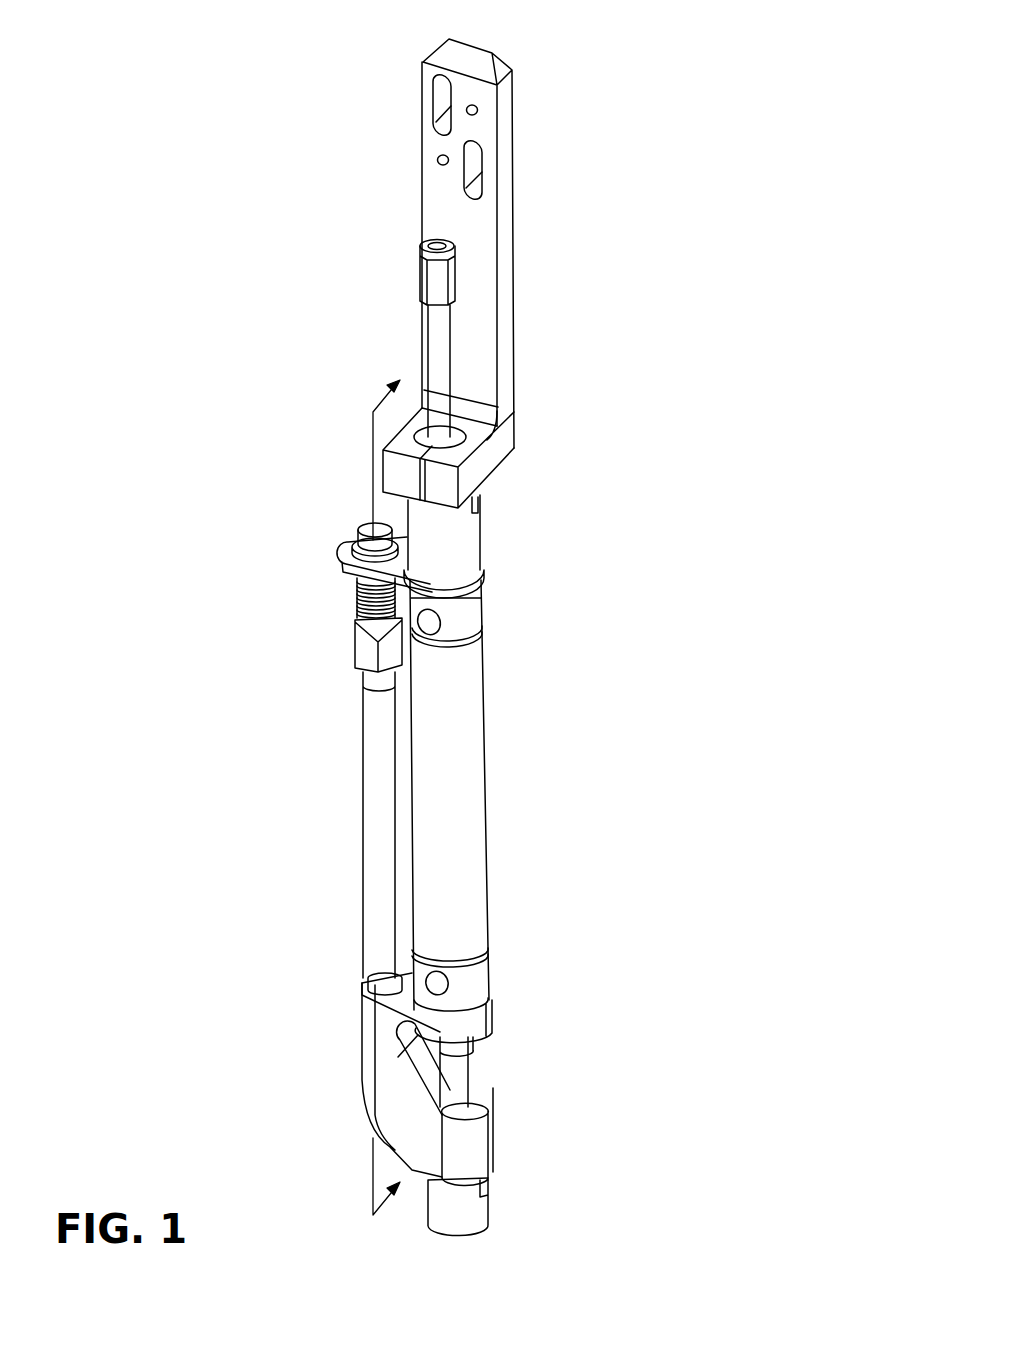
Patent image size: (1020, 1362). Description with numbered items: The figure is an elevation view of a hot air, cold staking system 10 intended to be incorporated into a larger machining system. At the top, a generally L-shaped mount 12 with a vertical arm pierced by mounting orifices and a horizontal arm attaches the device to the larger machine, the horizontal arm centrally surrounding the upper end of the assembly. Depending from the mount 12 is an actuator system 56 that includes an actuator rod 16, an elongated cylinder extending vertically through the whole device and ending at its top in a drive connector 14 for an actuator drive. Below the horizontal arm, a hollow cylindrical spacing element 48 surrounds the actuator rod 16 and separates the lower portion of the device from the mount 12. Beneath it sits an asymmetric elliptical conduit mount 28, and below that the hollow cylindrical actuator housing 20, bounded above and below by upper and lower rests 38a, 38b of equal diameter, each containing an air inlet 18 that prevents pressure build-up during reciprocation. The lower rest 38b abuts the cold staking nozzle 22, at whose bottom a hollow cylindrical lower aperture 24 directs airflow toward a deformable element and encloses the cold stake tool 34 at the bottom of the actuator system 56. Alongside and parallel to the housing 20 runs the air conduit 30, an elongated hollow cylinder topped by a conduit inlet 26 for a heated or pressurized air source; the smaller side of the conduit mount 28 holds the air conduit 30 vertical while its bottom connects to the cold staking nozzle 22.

The hot air, cold staking system 10 is at (316, 123).
The mount 12 is at (483, 52).
The drive connector 14 is at (449, 270).
The actuator rod 16 is at (443, 345).
The air inlet 18 is at (438, 640).
The actuator housing 20 is at (475, 793).
The cold staking nozzle 22 is at (498, 1135).
The lower aperture 24 is at (488, 1208).
The conduit inlet 26 is at (353, 515).
The conduit mount 28 is at (342, 553).
The air conduit 30 is at (372, 762).
The cold stake tool 34 is at (470, 1068).
The upper rest 38a is at (477, 605).
The lower rest 38b is at (488, 968).
The spacing element 48 is at (475, 530).
The actuator system 56 is at (534, 749).